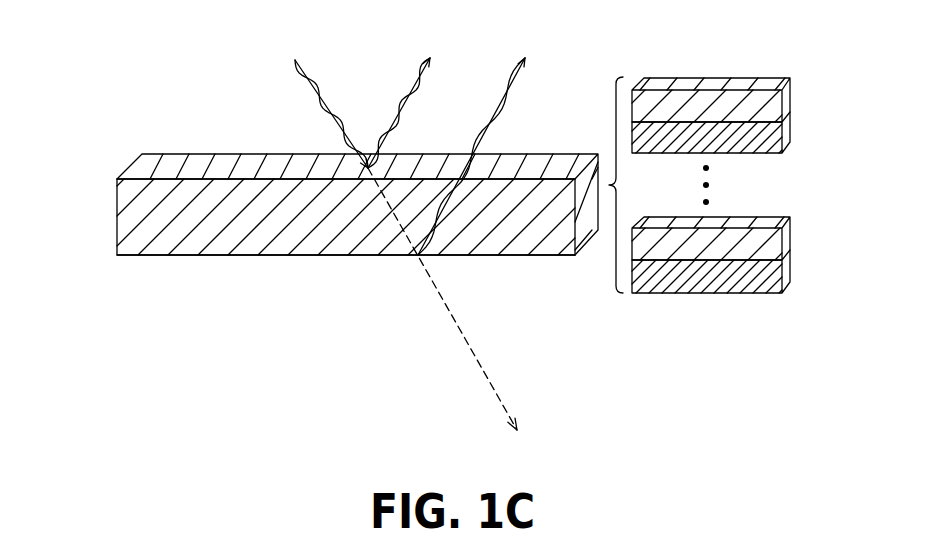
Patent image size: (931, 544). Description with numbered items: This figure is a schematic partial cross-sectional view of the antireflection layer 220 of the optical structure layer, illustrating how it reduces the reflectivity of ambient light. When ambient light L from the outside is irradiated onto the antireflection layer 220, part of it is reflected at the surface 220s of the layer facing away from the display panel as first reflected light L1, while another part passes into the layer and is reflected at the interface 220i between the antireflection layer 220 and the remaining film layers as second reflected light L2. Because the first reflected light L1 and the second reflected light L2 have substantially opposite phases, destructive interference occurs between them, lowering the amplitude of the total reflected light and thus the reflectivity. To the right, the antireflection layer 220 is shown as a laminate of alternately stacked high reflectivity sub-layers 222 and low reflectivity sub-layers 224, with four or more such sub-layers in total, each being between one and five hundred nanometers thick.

The antireflection layer 220 is at (133, 213).
The surface of the antireflection layer 220s is at (200, 163).
The interface 220i is at (228, 257).
The ambient light L is at (330, 100).
The first reflected light L1 is at (404, 99).
The second reflected light L2 is at (476, 143).
The low reflectivity sub-layer 224 is at (790, 97).
The high reflectivity sub-layer 222 is at (790, 128).